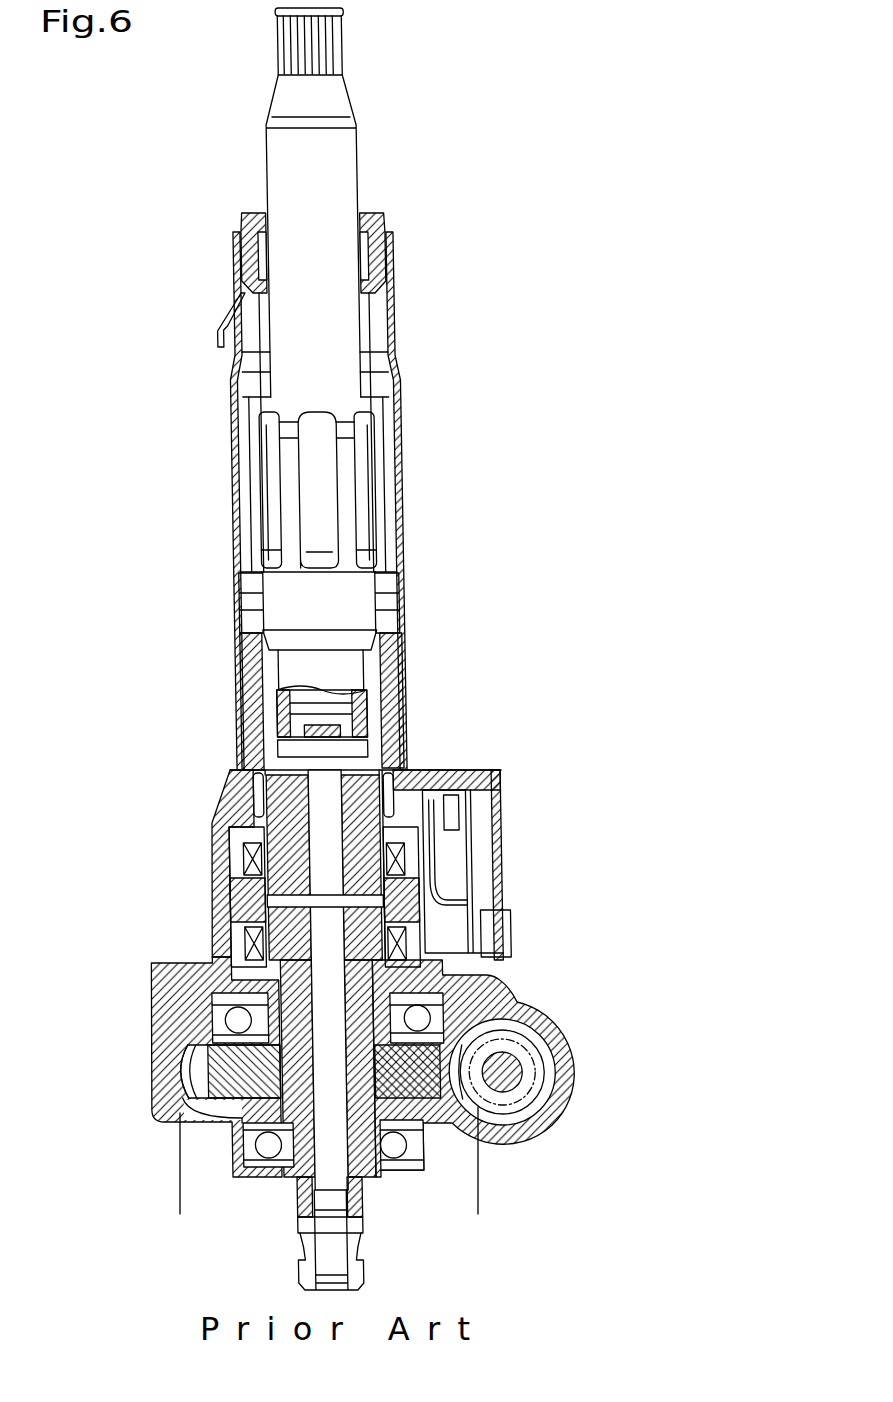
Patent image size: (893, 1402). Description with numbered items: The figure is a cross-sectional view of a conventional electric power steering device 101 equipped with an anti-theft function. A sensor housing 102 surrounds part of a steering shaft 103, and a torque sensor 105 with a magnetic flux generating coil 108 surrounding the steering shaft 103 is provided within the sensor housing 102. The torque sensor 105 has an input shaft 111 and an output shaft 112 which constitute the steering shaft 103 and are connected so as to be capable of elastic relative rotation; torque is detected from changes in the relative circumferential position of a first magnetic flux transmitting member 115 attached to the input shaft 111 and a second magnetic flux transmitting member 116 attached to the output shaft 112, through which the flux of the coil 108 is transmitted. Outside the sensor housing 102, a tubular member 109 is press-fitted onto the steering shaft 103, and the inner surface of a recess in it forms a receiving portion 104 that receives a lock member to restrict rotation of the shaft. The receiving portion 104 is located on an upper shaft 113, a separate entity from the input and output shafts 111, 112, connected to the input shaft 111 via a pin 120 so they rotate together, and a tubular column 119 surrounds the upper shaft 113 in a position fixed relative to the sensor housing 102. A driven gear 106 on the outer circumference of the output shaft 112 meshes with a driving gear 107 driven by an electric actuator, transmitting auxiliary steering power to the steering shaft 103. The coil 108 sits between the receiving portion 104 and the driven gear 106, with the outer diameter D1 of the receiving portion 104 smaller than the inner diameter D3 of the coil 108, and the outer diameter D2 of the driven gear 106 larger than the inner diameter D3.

The electric power steering device 101 is at (400, 272).
The sensor housing 102 is at (220, 903).
The steering shaft 103 is at (343, 316).
The receiving portion 104 is at (330, 454).
The torque sensor 105 is at (228, 862).
The driven gear 106 is at (185, 1083).
The driving gear 107 is at (502, 1100).
The magnetic flux generating coil 108 is at (262, 848).
The tubular member 109 is at (348, 508).
The input shaft 111 is at (280, 793).
The output shaft 112 is at (356, 1275).
The upper shaft 113 is at (287, 677).
The first magnetic flux transmitting member 115 is at (432, 918).
The second magnetic flux transmitting member 116 is at (497, 970).
The tubular column 119 is at (233, 492).
The pin 120 is at (280, 745).
The outer diameter of the receiving portion D1 is at (254, 588).
The outer diameter of the driven gear D2 is at (476, 1207).
The inner diameter of the coil D3 is at (297, 980).